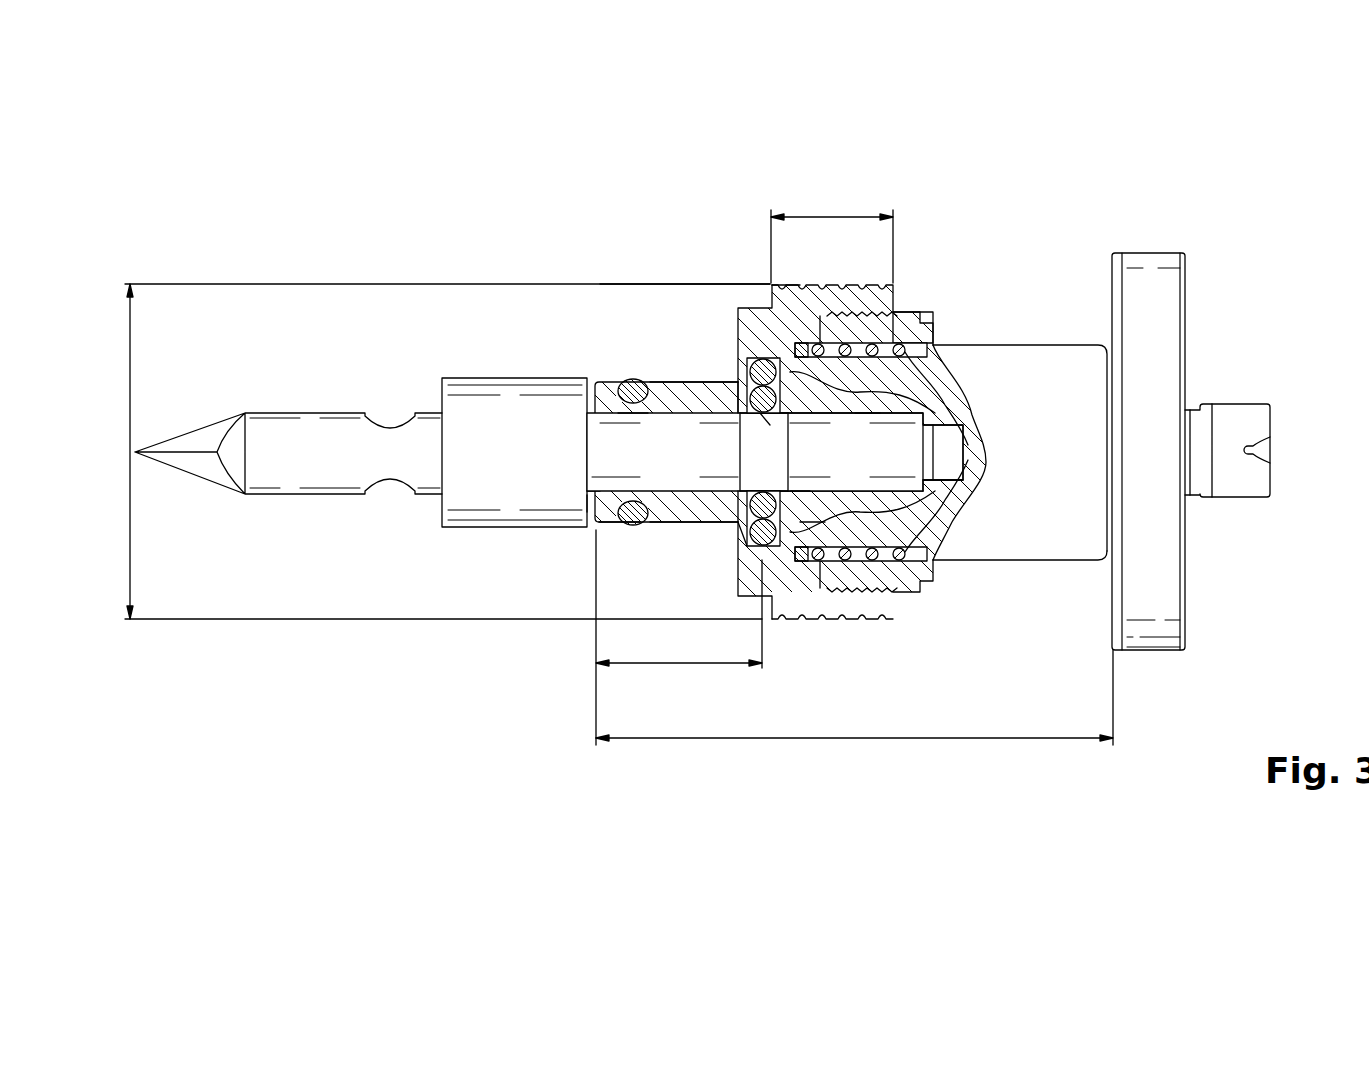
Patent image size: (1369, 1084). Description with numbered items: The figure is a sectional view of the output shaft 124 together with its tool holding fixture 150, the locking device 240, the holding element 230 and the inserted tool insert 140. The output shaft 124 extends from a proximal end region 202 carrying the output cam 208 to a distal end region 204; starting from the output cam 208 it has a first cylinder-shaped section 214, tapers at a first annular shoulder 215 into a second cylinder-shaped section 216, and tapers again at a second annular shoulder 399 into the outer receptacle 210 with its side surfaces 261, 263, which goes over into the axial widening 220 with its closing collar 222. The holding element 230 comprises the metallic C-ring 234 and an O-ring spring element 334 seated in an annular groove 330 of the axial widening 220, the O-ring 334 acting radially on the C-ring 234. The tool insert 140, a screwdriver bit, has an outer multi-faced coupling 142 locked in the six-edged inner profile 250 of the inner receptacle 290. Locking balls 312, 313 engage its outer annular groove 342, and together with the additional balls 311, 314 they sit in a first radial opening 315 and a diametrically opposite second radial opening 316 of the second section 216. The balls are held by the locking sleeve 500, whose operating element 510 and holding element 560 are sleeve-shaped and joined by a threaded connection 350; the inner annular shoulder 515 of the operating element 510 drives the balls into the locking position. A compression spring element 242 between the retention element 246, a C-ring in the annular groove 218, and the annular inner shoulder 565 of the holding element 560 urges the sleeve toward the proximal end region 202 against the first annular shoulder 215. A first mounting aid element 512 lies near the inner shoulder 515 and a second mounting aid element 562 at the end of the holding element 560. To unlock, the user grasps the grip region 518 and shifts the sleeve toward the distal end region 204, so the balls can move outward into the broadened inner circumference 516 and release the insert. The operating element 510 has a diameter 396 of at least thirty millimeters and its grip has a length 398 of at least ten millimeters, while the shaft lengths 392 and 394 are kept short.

The output shaft 124 is at (1052, 362).
The tool insert 140 is at (313, 428).
The outer multi-faced coupling 142 is at (948, 419).
The tool holding fixture 150 is at (684, 274).
The proximal end region 202 is at (1286, 411).
The distal end region 204 is at (572, 506).
The output cam 208 is at (1150, 268).
The outer receptacle 210 is at (667, 538).
The first cylinder-shaped section 214 is at (1070, 562).
The first annular shoulder 215 is at (948, 548).
The second cylinder-shaped section 216 is at (900, 506).
The annular groove 218 is at (812, 522).
The axial widening 220 is at (600, 366).
The closing collar 222 is at (597, 523).
The holding element 230 is at (617, 538).
The C-ring 234 is at (630, 376).
The locking device 240 is at (822, 632).
The spring element 242 is at (945, 386).
The retention element 246 is at (843, 292).
The six-edged inner profile 250 is at (595, 425).
The side surface 261 is at (680, 379).
The side surface 263 is at (720, 540).
The inner receptacle 290 is at (993, 471).
The locking ball 311 is at (790, 300).
The locking ball 312 is at (740, 425).
The locking ball 313 is at (740, 484).
The locking ball 314 is at (738, 550).
The first radial opening 315 is at (867, 400).
The second radial opening 316 is at (795, 491).
The annular groove 330 is at (590, 480).
The spring element 334 is at (633, 404).
The outer annular groove 342 is at (768, 432).
The threaded connection 350 is at (900, 608).
The axial length 392 is at (855, 742).
The axial length 394 is at (680, 668).
The diameter 396 is at (128, 440).
The length 398 is at (833, 210).
The second annular shoulder 399 is at (727, 378).
The locking sleeve 500 is at (906, 300).
The operating element 510 is at (858, 612).
The first mounting aid element 512 is at (757, 300).
The inner annular shoulder 515 is at (750, 335).
The broadened inner circumference 516 is at (797, 600).
The grip region 518 is at (872, 279).
The holding element 560 is at (935, 575).
The second mounting aid element 562 is at (905, 600).
The annular inner shoulder 565 is at (936, 356).